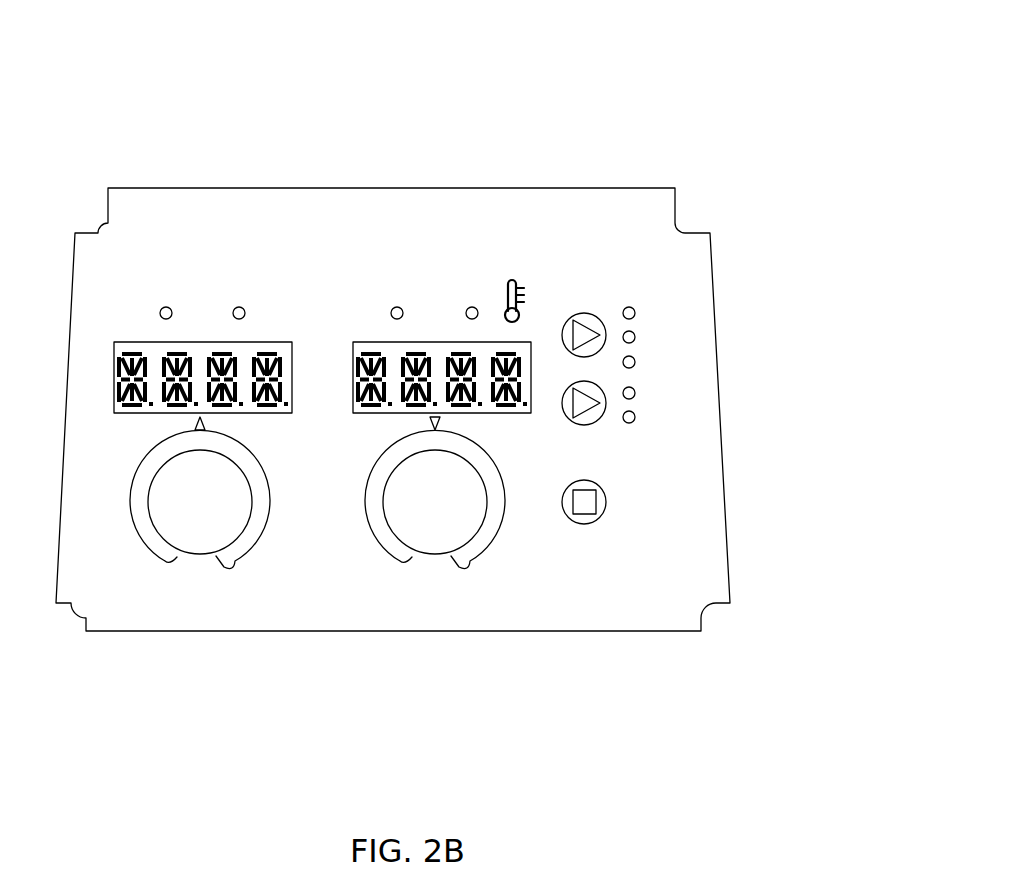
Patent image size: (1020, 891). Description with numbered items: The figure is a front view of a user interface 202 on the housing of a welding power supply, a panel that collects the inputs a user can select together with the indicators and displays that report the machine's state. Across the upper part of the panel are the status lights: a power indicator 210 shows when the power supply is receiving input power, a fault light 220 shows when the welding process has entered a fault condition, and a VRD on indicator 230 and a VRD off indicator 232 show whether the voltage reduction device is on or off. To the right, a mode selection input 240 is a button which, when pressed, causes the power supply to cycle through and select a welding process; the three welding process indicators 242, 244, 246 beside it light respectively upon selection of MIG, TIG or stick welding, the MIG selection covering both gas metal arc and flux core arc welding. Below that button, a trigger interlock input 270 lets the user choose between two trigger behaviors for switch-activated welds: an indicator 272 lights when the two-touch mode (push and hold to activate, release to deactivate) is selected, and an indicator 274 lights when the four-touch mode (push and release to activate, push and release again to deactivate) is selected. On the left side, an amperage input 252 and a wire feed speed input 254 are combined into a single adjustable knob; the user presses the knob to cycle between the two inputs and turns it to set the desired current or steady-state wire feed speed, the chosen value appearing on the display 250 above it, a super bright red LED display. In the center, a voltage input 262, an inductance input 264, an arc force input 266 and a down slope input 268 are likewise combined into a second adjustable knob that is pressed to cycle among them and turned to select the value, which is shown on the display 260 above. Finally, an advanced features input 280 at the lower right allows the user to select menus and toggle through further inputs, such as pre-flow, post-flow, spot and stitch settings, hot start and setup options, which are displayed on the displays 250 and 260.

The user interface 202 is at (642, 56).
The power indicator 210 is at (391, 321).
The fault light 220 is at (466, 321).
The VRD on indicator 230 is at (166, 303).
The VRD off indicator 232 is at (239, 303).
The mode selection input 240 is at (576, 314).
The welding process indicator 242 is at (627, 306).
The welding process indicator 244 is at (630, 331).
The welding process indicator 246 is at (636, 358).
The display 250 is at (260, 418).
The amperage input 252 is at (155, 569).
The wire feed speed input 254 is at (198, 546).
The display 260 is at (368, 418).
The voltage input 262 is at (537, 571).
The inductance input 264 is at (537, 571).
The arc force input 266 is at (537, 571).
The down slope input 268 is at (452, 548).
The trigger interlock input 270 is at (567, 388).
The 2T mode indicator 272 is at (636, 389).
The 4T mode indicator 274 is at (636, 421).
The advanced features input 280 is at (601, 516).